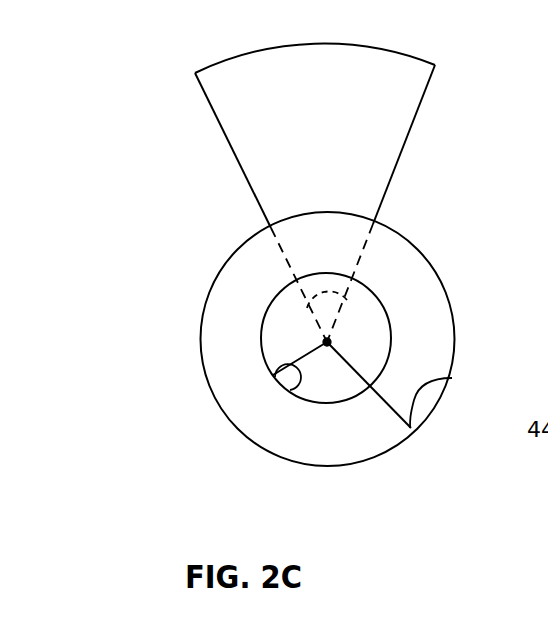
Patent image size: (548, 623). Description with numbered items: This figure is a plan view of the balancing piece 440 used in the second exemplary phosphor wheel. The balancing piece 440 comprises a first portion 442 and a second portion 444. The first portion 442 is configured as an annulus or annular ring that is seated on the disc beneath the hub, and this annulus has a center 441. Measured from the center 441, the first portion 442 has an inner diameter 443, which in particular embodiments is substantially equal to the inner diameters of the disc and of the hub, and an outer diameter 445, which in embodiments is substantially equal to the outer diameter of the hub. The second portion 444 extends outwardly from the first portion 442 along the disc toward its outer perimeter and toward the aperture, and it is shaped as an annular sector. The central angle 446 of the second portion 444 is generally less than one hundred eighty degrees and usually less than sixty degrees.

The balancing piece 440 is at (134, 95).
The center 441 is at (290, 343).
The first portion 442 is at (218, 325).
The inner diameter 443 is at (290, 390).
The second portion 444 is at (252, 153).
The outer diameter 445 is at (452, 378).
The central angle 446 is at (343, 279).